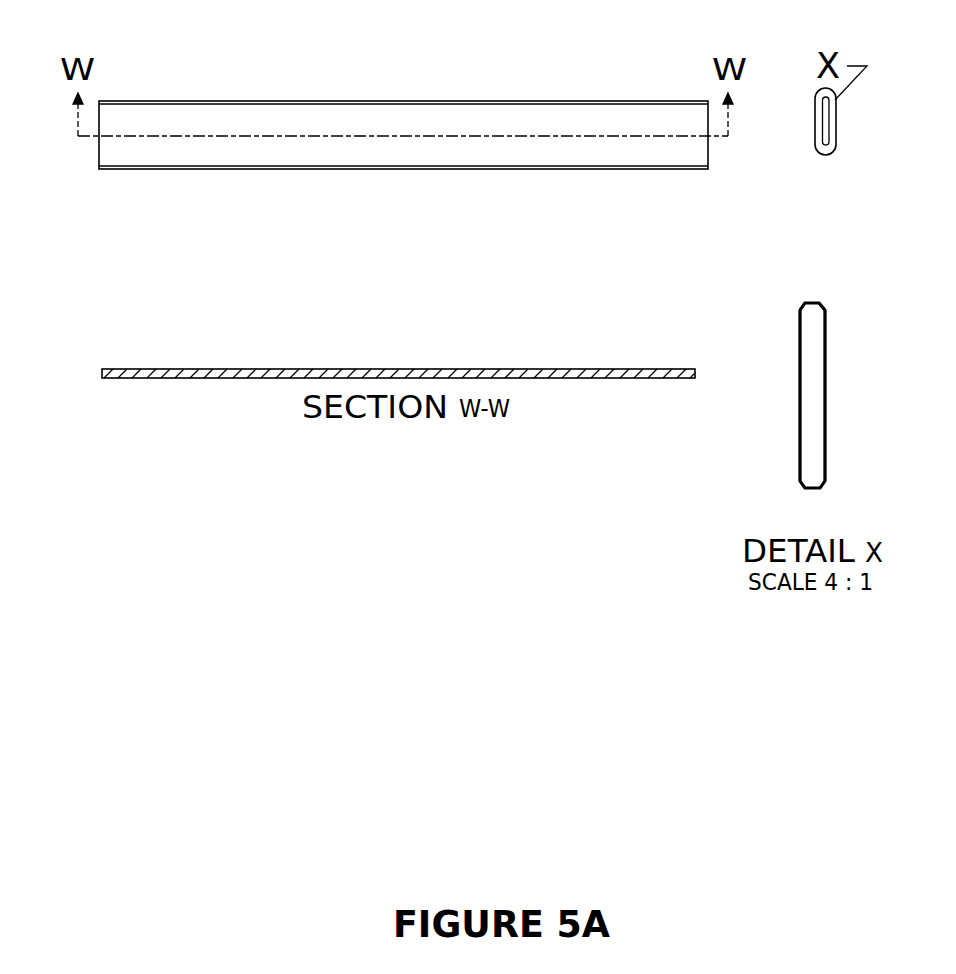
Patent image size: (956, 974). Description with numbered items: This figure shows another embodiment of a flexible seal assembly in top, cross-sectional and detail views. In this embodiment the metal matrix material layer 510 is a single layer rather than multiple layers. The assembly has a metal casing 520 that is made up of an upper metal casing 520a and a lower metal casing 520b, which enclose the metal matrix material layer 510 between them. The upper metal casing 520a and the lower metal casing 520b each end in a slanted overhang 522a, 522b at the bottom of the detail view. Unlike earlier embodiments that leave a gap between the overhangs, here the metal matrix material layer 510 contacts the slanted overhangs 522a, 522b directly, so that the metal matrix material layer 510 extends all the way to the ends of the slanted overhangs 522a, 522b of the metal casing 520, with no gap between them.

The metal matrix material layer 510 is at (813, 385).
The metal casing 520 is at (882, 255).
The upper metal casing 520a is at (503, 120).
The lower metal casing 520b is at (825, 334).
The slanted overhang 522a is at (802, 485).
The slanted overhang 522b is at (823, 485).